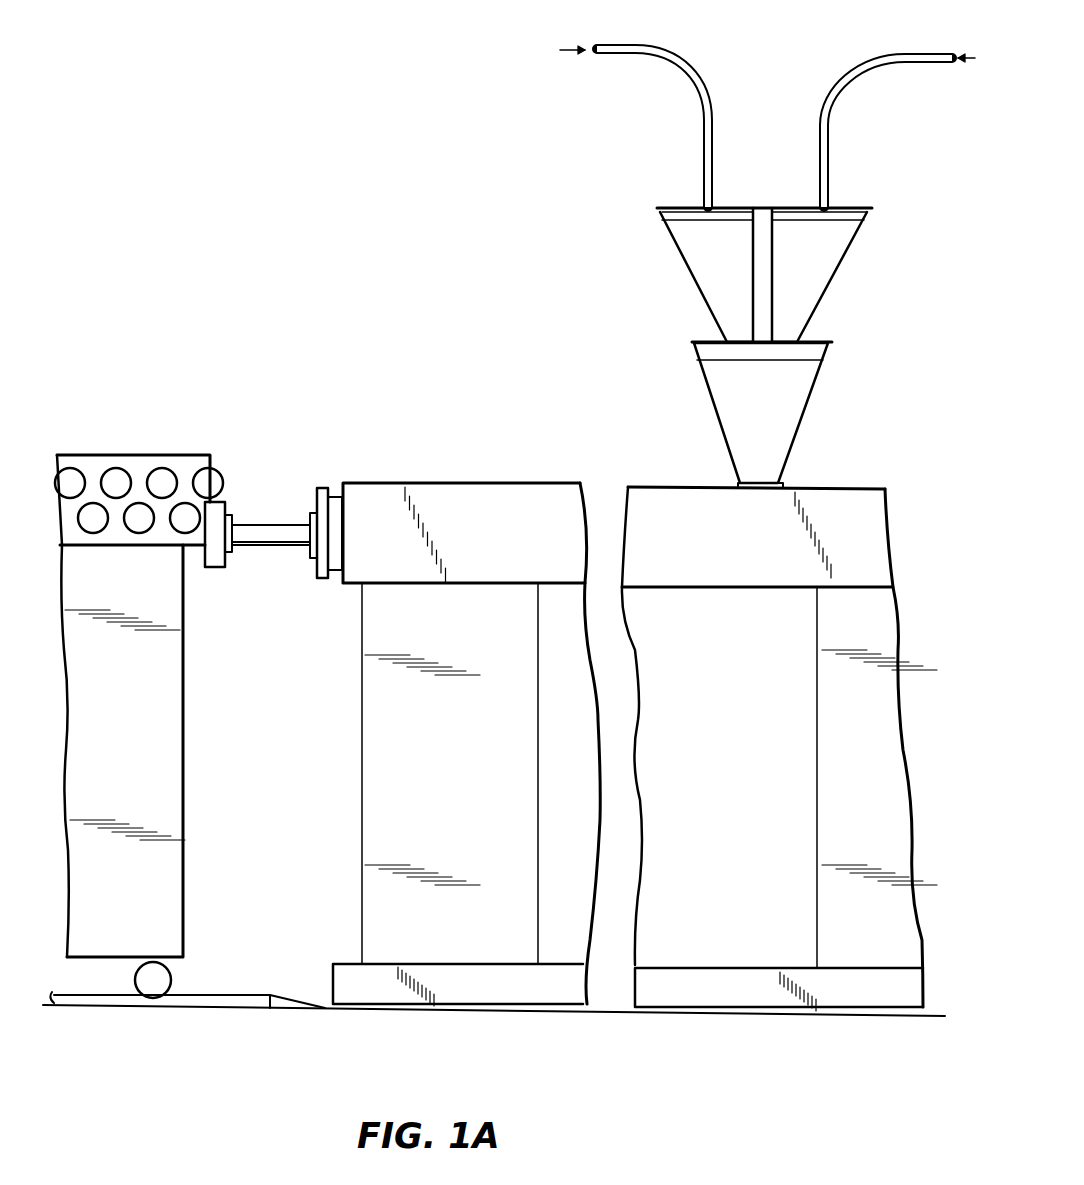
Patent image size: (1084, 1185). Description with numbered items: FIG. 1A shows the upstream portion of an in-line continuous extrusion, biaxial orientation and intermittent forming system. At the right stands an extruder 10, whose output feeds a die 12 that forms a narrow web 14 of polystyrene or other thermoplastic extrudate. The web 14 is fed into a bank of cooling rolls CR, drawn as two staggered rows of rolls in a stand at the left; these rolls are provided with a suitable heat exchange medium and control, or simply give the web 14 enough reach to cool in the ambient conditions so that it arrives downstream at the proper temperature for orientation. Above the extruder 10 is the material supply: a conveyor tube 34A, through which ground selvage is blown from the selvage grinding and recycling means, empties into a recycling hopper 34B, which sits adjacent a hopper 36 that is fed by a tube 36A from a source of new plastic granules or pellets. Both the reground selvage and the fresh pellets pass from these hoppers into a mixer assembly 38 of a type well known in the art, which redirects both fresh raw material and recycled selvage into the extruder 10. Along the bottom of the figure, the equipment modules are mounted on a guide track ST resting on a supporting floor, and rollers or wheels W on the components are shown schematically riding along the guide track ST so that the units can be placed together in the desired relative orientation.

The extruder 10 is at (728, 553).
The die 12 is at (232, 507).
The web 14 is at (217, 476).
The cooling rolls CR is at (88, 465).
The wheels W is at (172, 978).
The guide track ST is at (228, 995).
The conveyor tube 34A is at (632, 44).
The tube 36A is at (911, 47).
The recycling hopper 34B is at (705, 258).
The hopper 36 is at (819, 275).
The mixer assembly 38 is at (768, 407).